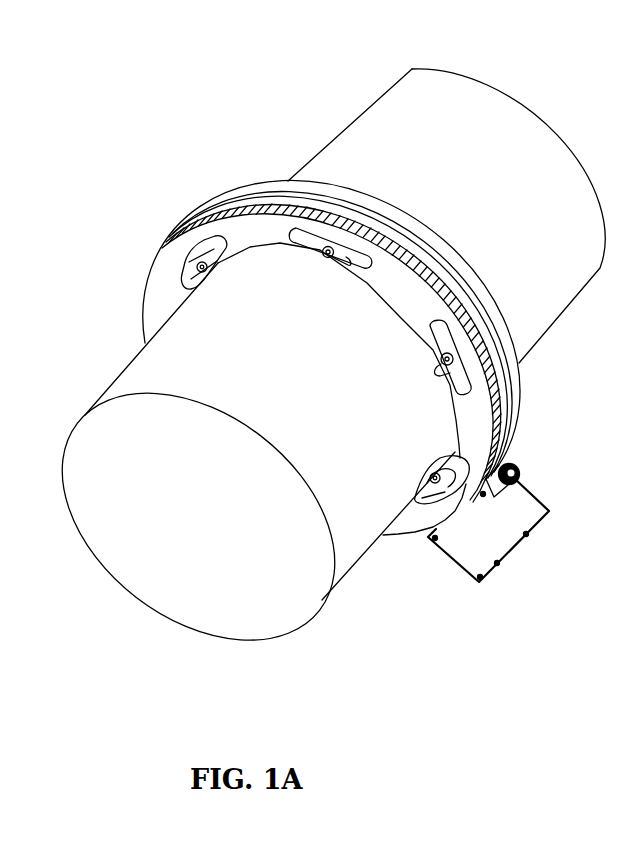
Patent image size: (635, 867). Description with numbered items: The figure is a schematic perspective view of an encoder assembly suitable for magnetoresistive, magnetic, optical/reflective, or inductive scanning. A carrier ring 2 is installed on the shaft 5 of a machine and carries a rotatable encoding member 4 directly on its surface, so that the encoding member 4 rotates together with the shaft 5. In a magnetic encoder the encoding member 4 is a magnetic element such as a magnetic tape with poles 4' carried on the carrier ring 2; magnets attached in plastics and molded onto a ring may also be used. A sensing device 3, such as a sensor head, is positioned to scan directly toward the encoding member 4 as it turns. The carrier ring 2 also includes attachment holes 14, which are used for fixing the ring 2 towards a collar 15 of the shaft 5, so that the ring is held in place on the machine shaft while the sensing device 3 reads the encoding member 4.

The carrier ring 2 is at (299, 363).
The sensing device 3 is at (508, 522).
The encoding member 4 is at (251, 179).
The poles 4' is at (458, 349).
The shaft 5 is at (310, 380).
The attachment holes 14 is at (320, 275).
The collar 15 is at (331, 285).